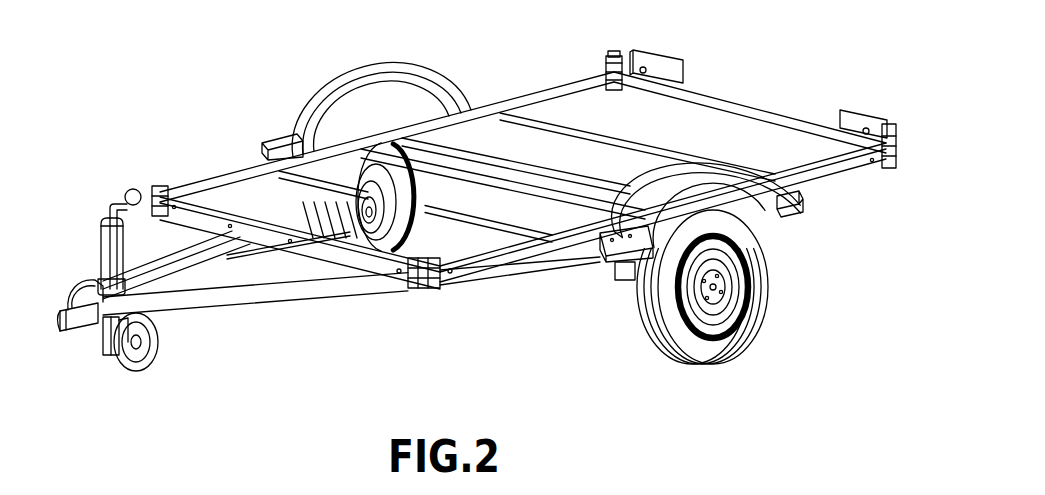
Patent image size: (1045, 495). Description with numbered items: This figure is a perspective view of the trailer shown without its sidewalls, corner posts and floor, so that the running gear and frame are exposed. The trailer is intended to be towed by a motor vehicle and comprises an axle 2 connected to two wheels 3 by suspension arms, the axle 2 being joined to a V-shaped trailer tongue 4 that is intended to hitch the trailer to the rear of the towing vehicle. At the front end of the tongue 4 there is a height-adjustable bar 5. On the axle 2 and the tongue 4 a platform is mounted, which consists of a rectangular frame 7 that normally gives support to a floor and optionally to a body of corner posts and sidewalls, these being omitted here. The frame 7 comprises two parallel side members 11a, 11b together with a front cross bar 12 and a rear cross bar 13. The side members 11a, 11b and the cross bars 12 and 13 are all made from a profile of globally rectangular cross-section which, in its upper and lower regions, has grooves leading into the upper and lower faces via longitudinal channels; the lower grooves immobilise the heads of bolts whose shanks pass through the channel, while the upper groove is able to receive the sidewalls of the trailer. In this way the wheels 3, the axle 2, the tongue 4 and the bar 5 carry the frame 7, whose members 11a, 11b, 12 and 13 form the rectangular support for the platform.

The axle 2 is at (388, 174).
The wheels 3 is at (768, 282).
The trailer tongue 4 is at (298, 293).
The height-adjustable bar 5 is at (105, 331).
The rectangular frame 7 is at (714, 95).
The side member 11a is at (852, 172).
The side member 11b is at (573, 81).
The front cross bar 12 is at (214, 200).
The rear cross bar 13 is at (796, 116).